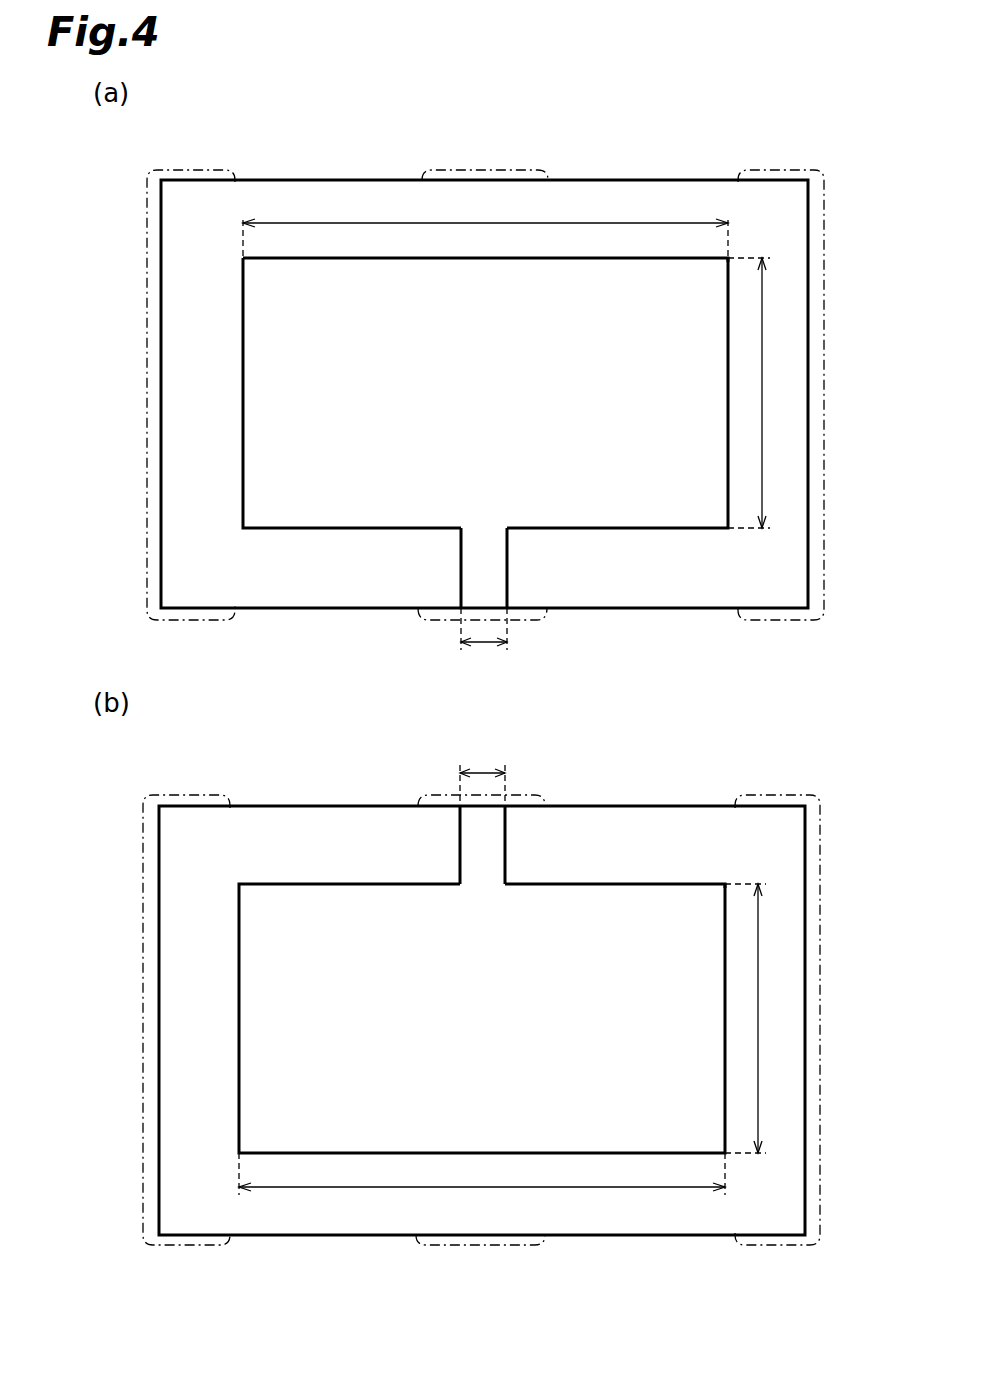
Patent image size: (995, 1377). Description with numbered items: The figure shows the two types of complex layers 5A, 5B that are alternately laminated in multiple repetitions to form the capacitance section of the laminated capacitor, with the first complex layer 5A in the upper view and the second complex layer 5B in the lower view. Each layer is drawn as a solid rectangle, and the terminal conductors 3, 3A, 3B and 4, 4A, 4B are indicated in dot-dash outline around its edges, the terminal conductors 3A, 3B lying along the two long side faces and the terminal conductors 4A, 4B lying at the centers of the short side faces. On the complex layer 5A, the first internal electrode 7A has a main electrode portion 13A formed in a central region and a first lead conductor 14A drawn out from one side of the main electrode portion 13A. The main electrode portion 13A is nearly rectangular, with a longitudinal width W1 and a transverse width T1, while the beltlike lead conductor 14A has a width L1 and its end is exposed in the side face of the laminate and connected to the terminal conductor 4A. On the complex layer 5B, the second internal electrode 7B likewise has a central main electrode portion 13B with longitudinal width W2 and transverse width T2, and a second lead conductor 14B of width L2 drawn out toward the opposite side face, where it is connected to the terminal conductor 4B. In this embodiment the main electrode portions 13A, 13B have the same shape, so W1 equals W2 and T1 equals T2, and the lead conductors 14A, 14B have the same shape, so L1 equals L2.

The terminal conductor 3 is at (487, 707).
The terminal conductor 3A is at (147, 328).
The terminal conductor 3B is at (824, 328).
The terminal conductor 4 is at (528, 711).
The terminal conductor 4A is at (520, 612).
The terminal conductor 4B is at (487, 170).
The complex layer 5A is at (805, 158).
The complex layer 5B is at (800, 785).
The first internal electrode 7A is at (729, 257).
The second internal electrode 7B is at (727, 884).
The main electrode portion 13A is at (275, 362).
The main electrode portion 13B is at (272, 988).
The first lead conductor 14A is at (470, 578).
The second lead conductor 14B is at (472, 843).
The longitudinal width of main electrode portion 13A W1 is at (485, 223).
The transverse width of main electrode portion 13A T1 is at (766, 393).
The width of lead conductor 14A L1 is at (484, 640).
The longitudinal width of main electrode portion 13B W2 is at (482, 1183).
The transverse width of main electrode portion 13B T2 is at (761, 1018).
The width of lead conductor 14B L2 is at (482, 772).